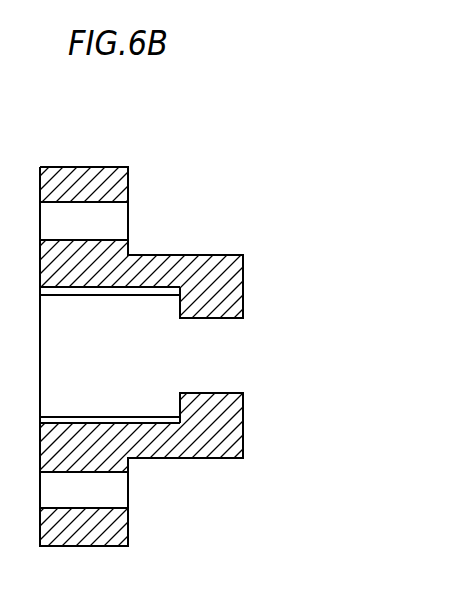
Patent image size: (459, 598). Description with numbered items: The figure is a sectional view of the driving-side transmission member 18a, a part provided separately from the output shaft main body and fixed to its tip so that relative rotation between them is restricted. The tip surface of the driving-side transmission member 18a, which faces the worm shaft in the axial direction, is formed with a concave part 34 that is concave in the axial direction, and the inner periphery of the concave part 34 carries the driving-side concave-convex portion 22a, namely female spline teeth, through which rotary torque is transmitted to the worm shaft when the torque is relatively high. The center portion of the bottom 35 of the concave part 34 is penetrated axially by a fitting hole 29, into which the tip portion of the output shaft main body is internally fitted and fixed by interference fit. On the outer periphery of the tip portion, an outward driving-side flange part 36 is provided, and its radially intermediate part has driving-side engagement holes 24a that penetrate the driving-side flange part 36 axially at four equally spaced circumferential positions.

The driving-side transmission member 18a is at (175, 262).
The driving-side flange part 36 is at (88, 178).
The driving-side engagement holes 24a is at (88, 204).
The bottom 35 is at (213, 312).
The fitting hole 29 is at (212, 393).
The driving-side concave-convex portion 22a is at (63, 295).
The concave part 34 is at (102, 295).